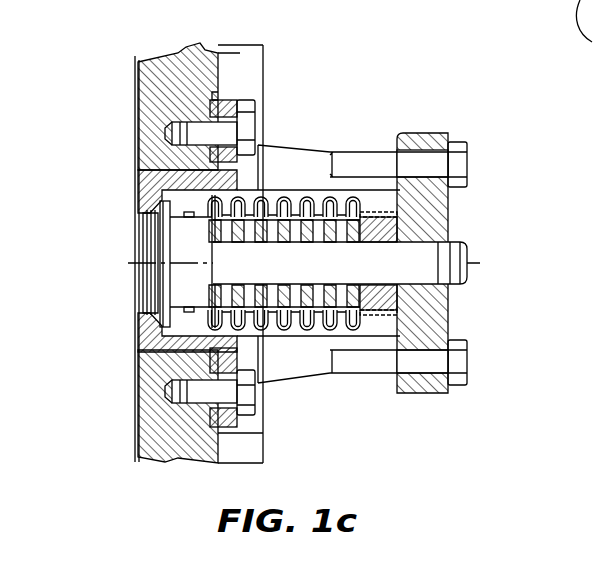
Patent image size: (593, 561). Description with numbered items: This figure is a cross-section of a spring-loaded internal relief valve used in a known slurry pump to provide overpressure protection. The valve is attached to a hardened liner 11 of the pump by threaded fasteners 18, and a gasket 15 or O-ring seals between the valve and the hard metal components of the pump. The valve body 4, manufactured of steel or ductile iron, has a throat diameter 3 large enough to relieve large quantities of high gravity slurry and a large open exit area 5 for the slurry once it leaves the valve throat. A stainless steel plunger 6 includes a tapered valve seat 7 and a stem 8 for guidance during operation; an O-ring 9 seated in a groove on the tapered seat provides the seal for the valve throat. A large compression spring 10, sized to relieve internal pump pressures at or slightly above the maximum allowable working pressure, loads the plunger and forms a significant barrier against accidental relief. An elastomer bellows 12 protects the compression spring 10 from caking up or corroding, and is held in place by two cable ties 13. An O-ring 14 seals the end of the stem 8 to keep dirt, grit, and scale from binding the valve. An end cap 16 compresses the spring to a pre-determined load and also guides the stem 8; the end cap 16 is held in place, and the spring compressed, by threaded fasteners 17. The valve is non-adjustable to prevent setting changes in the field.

The throat diameter 3 is at (72, 217).
The valve body 4 is at (238, 92).
The open exit area 5 is at (285, 102).
The plunger 6 is at (188, 287).
The tapered valve seat 7 is at (142, 328).
The stem 8 is at (437, 300).
The O-ring 9 is at (148, 205).
The compression spring 10 is at (327, 328).
The liner 11 is at (150, 399).
The elastomer bellows 12 is at (313, 323).
The cable ties 13 is at (188, 212).
The O-ring 14 is at (458, 282).
The gasket 15 is at (198, 98).
The end cap 16 is at (438, 216).
The threaded fasteners 17 is at (461, 165).
The threaded fasteners 18 is at (249, 116).